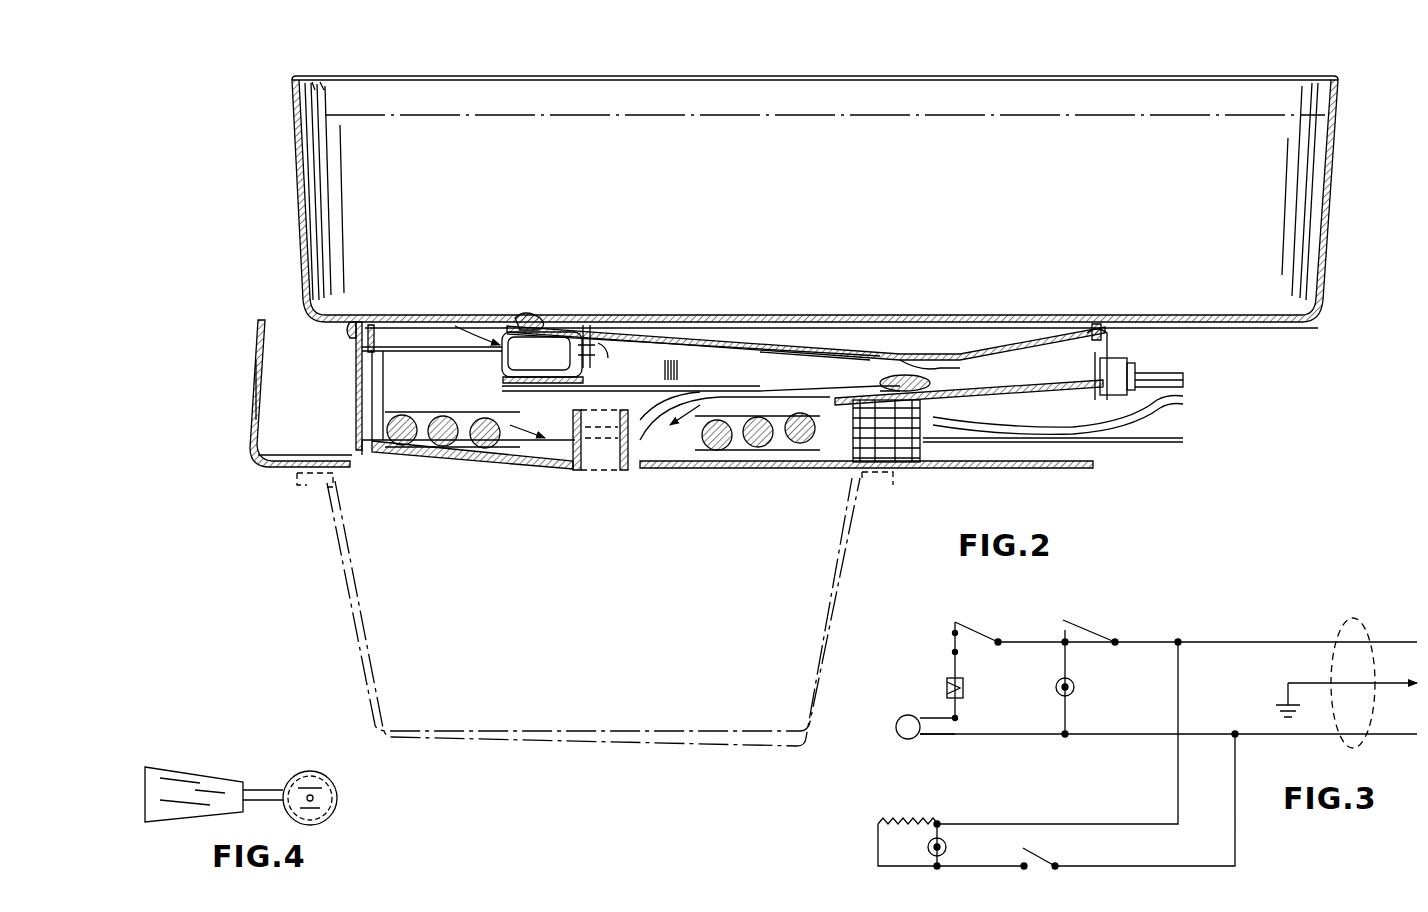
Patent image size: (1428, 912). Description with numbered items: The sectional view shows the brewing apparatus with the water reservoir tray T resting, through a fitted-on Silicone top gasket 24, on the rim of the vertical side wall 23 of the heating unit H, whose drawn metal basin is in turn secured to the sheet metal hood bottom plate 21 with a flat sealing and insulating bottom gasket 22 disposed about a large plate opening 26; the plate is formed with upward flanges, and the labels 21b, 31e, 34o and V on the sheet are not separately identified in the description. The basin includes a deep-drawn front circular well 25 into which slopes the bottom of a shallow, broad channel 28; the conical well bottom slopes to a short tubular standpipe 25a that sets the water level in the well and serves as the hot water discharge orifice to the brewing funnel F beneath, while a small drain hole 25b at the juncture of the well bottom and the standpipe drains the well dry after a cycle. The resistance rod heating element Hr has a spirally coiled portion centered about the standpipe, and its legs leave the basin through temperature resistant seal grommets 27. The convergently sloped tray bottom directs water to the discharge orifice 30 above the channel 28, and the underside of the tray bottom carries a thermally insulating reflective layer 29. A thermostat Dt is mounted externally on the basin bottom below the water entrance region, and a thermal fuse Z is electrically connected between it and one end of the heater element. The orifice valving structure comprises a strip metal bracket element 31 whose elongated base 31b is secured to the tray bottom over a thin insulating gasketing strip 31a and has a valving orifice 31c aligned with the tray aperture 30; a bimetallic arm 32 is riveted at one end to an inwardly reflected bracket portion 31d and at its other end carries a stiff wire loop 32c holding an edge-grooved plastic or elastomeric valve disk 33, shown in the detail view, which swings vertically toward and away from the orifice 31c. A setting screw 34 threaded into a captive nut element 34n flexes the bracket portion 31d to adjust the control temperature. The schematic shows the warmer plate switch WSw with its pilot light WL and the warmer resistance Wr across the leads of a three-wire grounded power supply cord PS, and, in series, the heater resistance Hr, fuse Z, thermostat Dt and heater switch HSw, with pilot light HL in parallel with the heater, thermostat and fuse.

In FIG. 2, the water reservoir tray T is at (293, 207).
In FIG. 2, the hood bottom plate 21 is at (280, 462).
In FIG. 2, the base flange 21b is at (256, 428).
In FIG. 2, the bottom gasket 22 is at (355, 452).
In FIG. 2, the basin side wall 23 is at (356, 376).
In FIG. 2, the top gasket 24 is at (347, 336).
In FIG. 2, the front circular well 25 is at (830, 468).
In FIG. 2, the standpipe 25a is at (626, 470).
In FIG. 2, the drain hole 25b is at (583, 468).
In FIG. 2, the plate opening 26 is at (378, 466).
In FIG. 2, the seal grommets 27 is at (1036, 398).
In FIG. 2, the channel 28 is at (1043, 380).
In FIG. 2, the thermally insulating layer 29 is at (392, 327).
In FIG. 2, the discharge orifice 30 is at (920, 335).
In FIG. 2, the bracket element 31 is at (470, 328).
In FIG. 2, the insulating gasketing strip 31a is at (522, 320).
In FIG. 2, the elongated base 31b is at (716, 340).
In FIG. 2, the valving orifice 31c is at (935, 352).
In FIG. 2, the bracket portion 31d is at (503, 372).
In FIG. 2, the lever base plate 31e is at (543, 366).
In FIG. 2, the bimetallic arm 32 is at (775, 352).
In FIG. 4, the bimetallic arm 32 is at (205, 788).
In FIG. 2, the wire loop 32c is at (872, 362).
In FIG. 4, the wire loop 32c is at (265, 790).
In FIG. 2, the valve member 33 is at (935, 384).
In FIG. 4, the valve member 33 is at (335, 796).
In FIG. 2, the setting screw 34 is at (590, 323).
In FIG. 2, the screw head 34o is at (602, 326).
In FIG. 2, the nut element 34n is at (647, 370).
In FIG. 2, the valve V is at (972, 347).
In FIG. 2, the heating unit H is at (1118, 353).
In FIG. 2, the heating element Hr is at (1207, 372).
In FIG. 3, the heating element Hr is at (920, 718).
In FIG. 2, the thermostat Dt is at (928, 452).
In FIG. 3, the thermostat Dt is at (950, 624).
In FIG. 2, the brewing funnel F is at (845, 612).
In FIG. 3, the thermal fuse Z is at (946, 686).
In FIG. 3, the heater unit switch HSw is at (1108, 614).
In FIG. 3, the heater pilot light HL is at (1056, 688).
In FIG. 3, the power supply cord PS is at (1368, 650).
In FIG. 3, the warmer plate resistance Wr is at (915, 820).
In FIG. 3, the warmer pilot light WL is at (945, 860).
In FIG. 3, the warmer plate switch WSw is at (1040, 870).